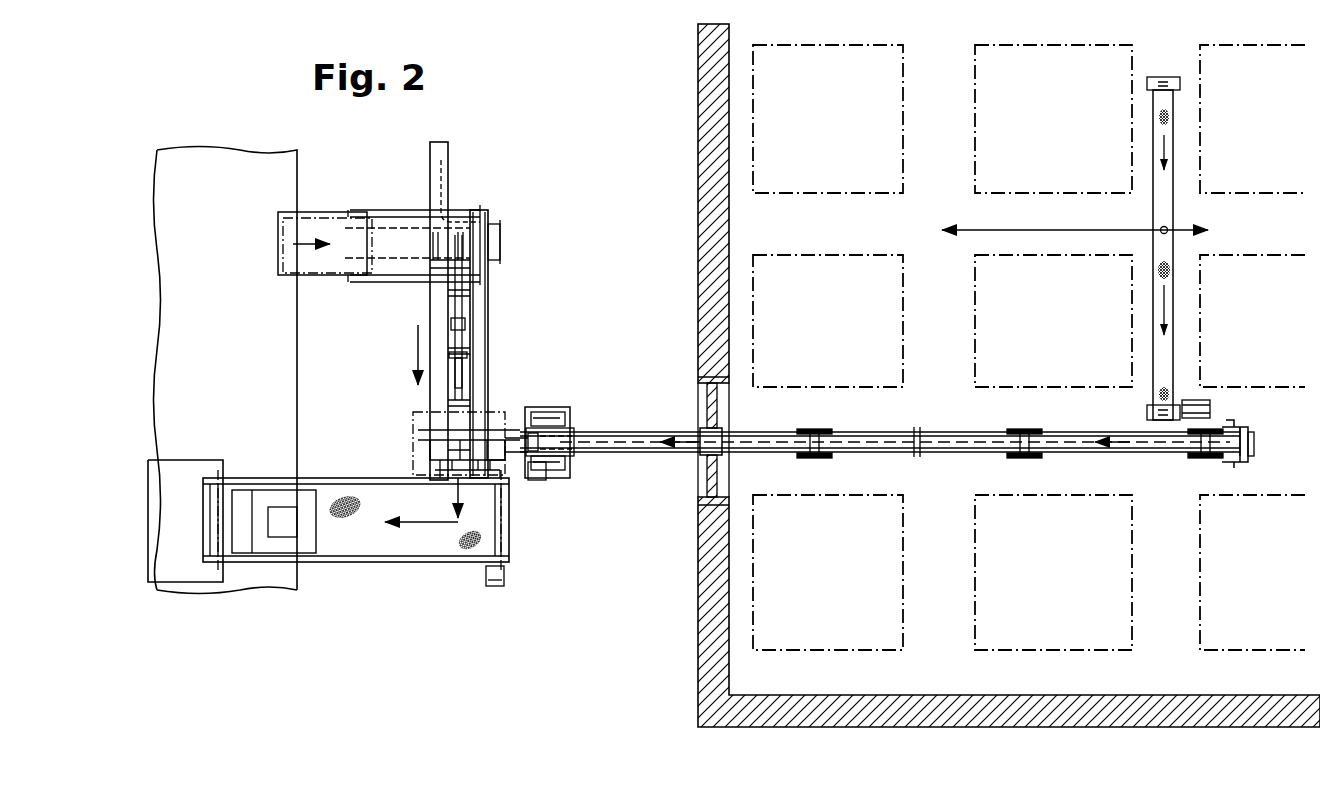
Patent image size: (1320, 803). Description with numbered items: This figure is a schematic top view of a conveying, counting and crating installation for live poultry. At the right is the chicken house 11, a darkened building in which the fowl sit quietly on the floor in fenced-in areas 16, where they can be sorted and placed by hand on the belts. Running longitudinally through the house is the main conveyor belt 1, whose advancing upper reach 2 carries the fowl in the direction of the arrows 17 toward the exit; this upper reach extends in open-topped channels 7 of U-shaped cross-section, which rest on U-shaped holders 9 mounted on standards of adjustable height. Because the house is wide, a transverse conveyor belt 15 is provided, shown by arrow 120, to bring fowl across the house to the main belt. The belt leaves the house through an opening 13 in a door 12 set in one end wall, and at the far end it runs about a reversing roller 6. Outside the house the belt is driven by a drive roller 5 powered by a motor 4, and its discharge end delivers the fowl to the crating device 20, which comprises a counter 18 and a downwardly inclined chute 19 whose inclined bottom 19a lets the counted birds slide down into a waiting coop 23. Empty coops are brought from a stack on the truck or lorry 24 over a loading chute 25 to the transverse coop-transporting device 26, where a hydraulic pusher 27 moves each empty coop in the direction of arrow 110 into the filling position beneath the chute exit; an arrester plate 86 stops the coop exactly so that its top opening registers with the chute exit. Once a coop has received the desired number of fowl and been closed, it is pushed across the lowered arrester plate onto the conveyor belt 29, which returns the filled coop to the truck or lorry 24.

The conveyor belt 1 is at (908, 430).
The upper reach 2 is at (882, 450).
The motor 4 is at (540, 478).
The drive roller 5 is at (530, 430).
The reversing roller 6 is at (1240, 428).
The open-topped channels 7 is at (940, 452).
The U-shaped holders 9 is at (818, 430).
The chicken house 11 is at (696, 178).
The door 12 is at (707, 478).
The opening 13 is at (700, 430).
The transverse conveyor belts 15 is at (1150, 211).
The fenced-in areas 16 is at (838, 128).
The arrows 17 is at (1125, 450).
The counter 18 is at (566, 446).
The inclined chute 19 is at (512, 455).
The inclined bottom 19a is at (455, 437).
The crating device 20 is at (515, 426).
The coop 23 is at (264, 496).
The truck or lorry 24 is at (223, 203).
The loading chute 25 is at (397, 207).
The transverse coop-transporting device 26 is at (490, 292).
The hydraulic pusher 27 is at (455, 297).
The conveyor belt 29 is at (388, 550).
The arrester plate 86 is at (456, 480).
The arrow 110 is at (416, 341).
The travel direction 120 is at (1028, 223).